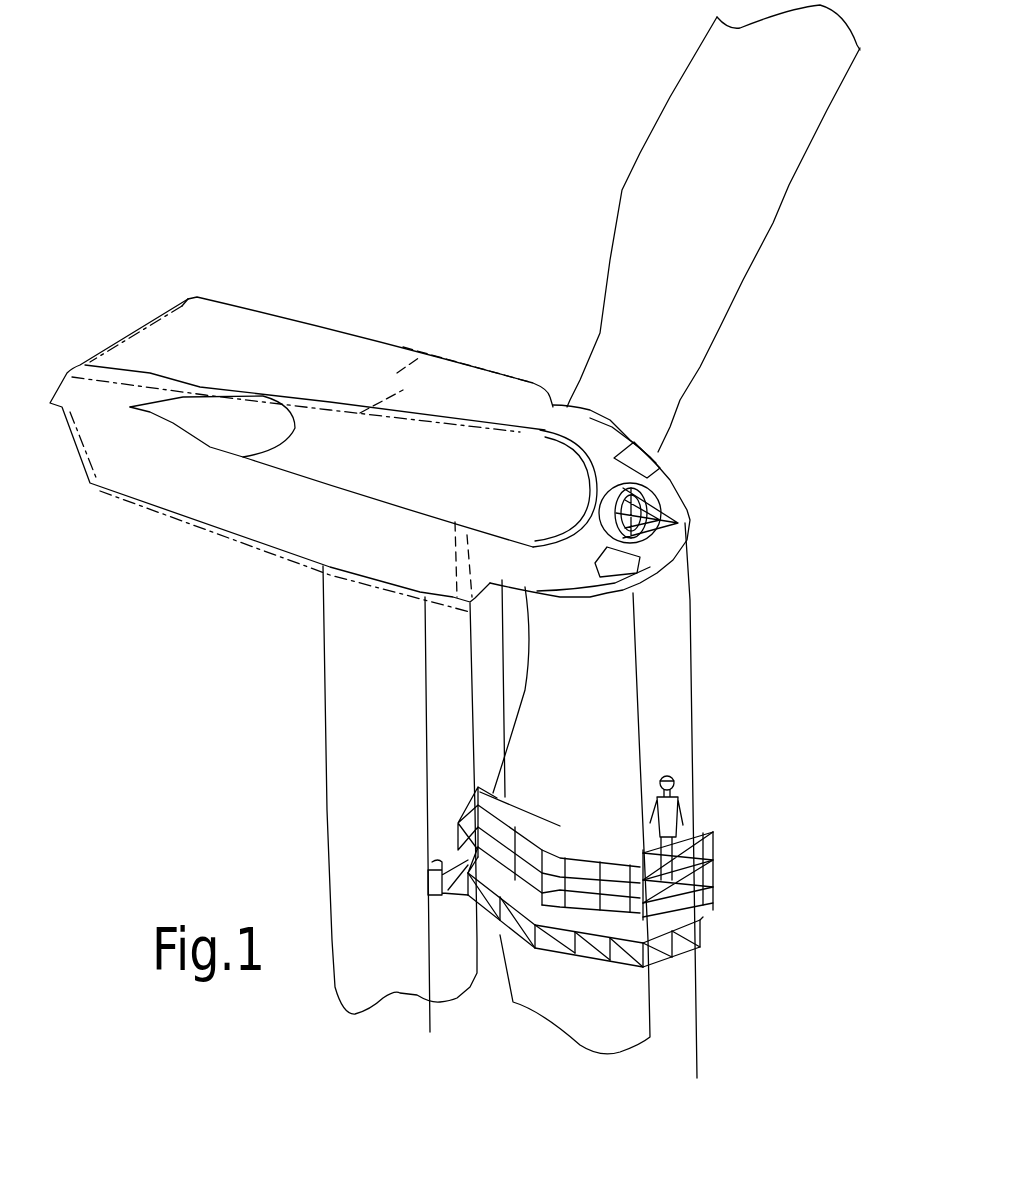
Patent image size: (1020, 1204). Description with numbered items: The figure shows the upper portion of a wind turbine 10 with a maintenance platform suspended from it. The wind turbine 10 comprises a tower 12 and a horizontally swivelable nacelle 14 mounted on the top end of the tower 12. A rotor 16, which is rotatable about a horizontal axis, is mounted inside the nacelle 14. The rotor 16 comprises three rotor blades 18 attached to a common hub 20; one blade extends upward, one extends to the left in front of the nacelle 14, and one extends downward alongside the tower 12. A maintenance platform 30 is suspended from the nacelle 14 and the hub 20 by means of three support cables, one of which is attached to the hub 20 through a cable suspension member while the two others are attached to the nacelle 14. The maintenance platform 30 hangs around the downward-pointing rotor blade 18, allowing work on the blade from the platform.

The wind turbine 10 is at (189, 806).
The tower 12 is at (350, 752).
The nacelle 14 is at (230, 344).
The rotor 16 is at (619, 635).
The rotor blades 18 is at (438, 467).
The hub 20 is at (663, 482).
The maintenance platform 30 is at (607, 943).